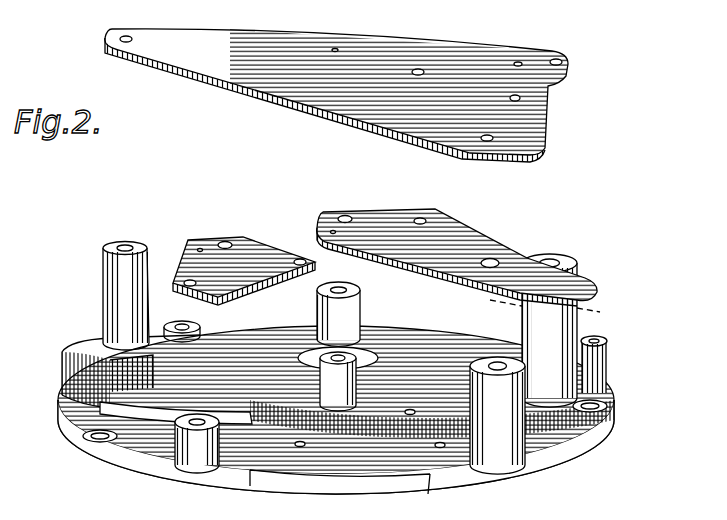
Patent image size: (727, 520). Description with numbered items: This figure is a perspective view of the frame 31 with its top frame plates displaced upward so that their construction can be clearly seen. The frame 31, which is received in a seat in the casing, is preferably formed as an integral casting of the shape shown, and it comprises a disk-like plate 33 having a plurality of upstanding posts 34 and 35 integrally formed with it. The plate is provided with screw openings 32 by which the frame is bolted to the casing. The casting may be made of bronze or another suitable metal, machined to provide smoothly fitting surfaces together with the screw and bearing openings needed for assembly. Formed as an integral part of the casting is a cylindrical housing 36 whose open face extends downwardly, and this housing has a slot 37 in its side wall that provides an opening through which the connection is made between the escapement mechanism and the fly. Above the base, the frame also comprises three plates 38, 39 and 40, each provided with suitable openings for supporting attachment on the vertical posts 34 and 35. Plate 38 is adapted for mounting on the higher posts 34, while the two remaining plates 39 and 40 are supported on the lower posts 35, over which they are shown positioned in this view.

The frame 31 is at (434, 476).
The screw openings 32 is at (82, 438).
The disk-like plate 33 is at (340, 472).
The higher posts 34 is at (116, 268).
The lower posts 35 is at (182, 331).
The cylindrical housing 36 is at (70, 380).
The slot 37 is at (130, 414).
The plate 38 is at (460, 55).
The plate 39 is at (250, 251).
The plate 40 is at (457, 238).